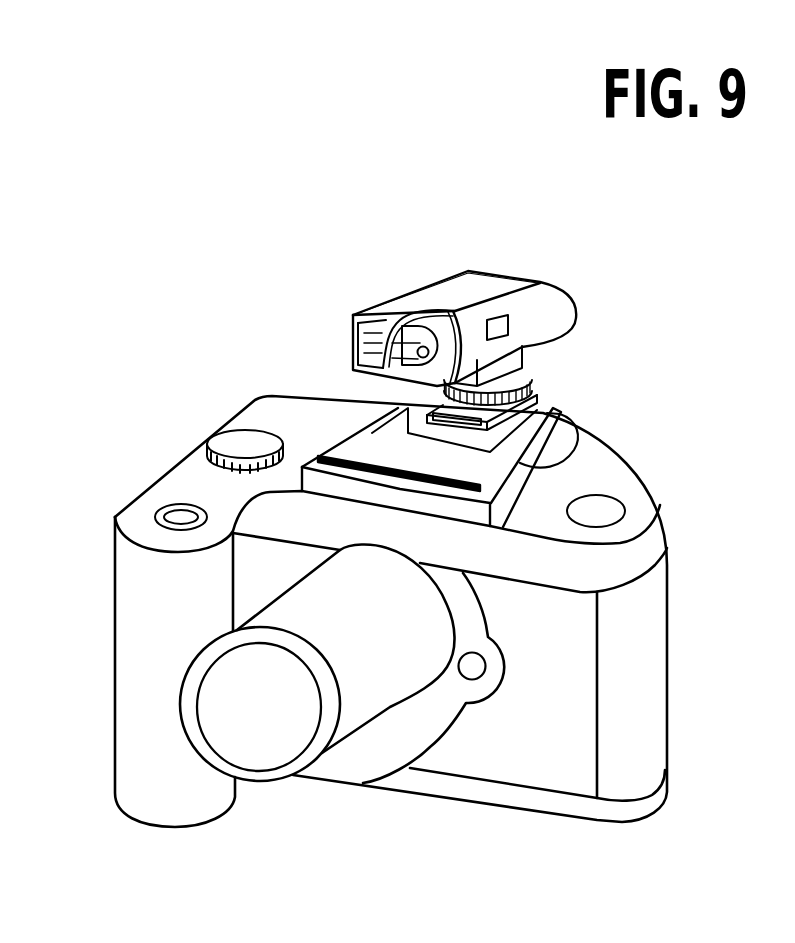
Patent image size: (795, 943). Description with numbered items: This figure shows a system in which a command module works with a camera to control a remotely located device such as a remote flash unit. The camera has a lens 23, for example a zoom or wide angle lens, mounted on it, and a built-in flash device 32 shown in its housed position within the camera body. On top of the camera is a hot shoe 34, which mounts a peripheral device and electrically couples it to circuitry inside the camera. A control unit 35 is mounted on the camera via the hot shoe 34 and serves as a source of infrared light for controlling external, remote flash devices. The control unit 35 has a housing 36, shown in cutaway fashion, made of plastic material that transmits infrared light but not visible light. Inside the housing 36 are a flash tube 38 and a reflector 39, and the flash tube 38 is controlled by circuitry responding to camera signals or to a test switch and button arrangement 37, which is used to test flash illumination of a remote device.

The lens 23 is at (380, 677).
The built-in flash device 32 is at (520, 463).
The hot shoe 34 is at (530, 395).
The control unit 35 is at (470, 270).
The housing 36 is at (522, 278).
The test switch and button arrangement 37 is at (515, 331).
The flash tube 38 is at (402, 326).
The reflector 39 is at (428, 310).